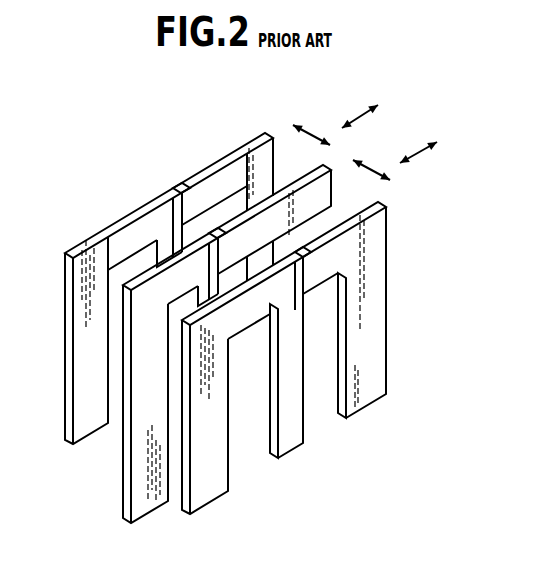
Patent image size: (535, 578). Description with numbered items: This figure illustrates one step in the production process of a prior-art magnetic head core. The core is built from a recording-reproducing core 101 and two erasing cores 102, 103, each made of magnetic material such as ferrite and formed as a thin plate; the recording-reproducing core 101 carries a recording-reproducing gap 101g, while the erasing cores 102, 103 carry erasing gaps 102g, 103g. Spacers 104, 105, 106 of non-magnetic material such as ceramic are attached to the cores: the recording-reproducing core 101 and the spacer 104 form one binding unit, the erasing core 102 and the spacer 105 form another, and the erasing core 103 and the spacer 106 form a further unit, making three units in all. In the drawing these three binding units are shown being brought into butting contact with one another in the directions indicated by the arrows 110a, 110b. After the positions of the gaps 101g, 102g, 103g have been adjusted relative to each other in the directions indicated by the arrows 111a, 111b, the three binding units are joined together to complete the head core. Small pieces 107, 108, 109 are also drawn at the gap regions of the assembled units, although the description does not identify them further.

The recording-reproducing core 101 is at (137, 462).
The erasing core 102 is at (247, 147).
The erasing core 103 is at (375, 396).
The spacer 104 is at (327, 199).
The spacer 105 is at (105, 243).
The spacer 106 is at (217, 488).
The recording-reproducing gap 101g is at (203, 232).
The erasing gap 102g is at (182, 186).
The erasing gap 103g is at (312, 250).
The spacer 107 is at (200, 272).
The spacer 108 is at (192, 195).
The spacer 109 is at (312, 282).
The arrow 110a is at (323, 140).
The arrow 110b is at (386, 172).
The arrow 111a is at (361, 116).
The arrow 111b is at (414, 152).